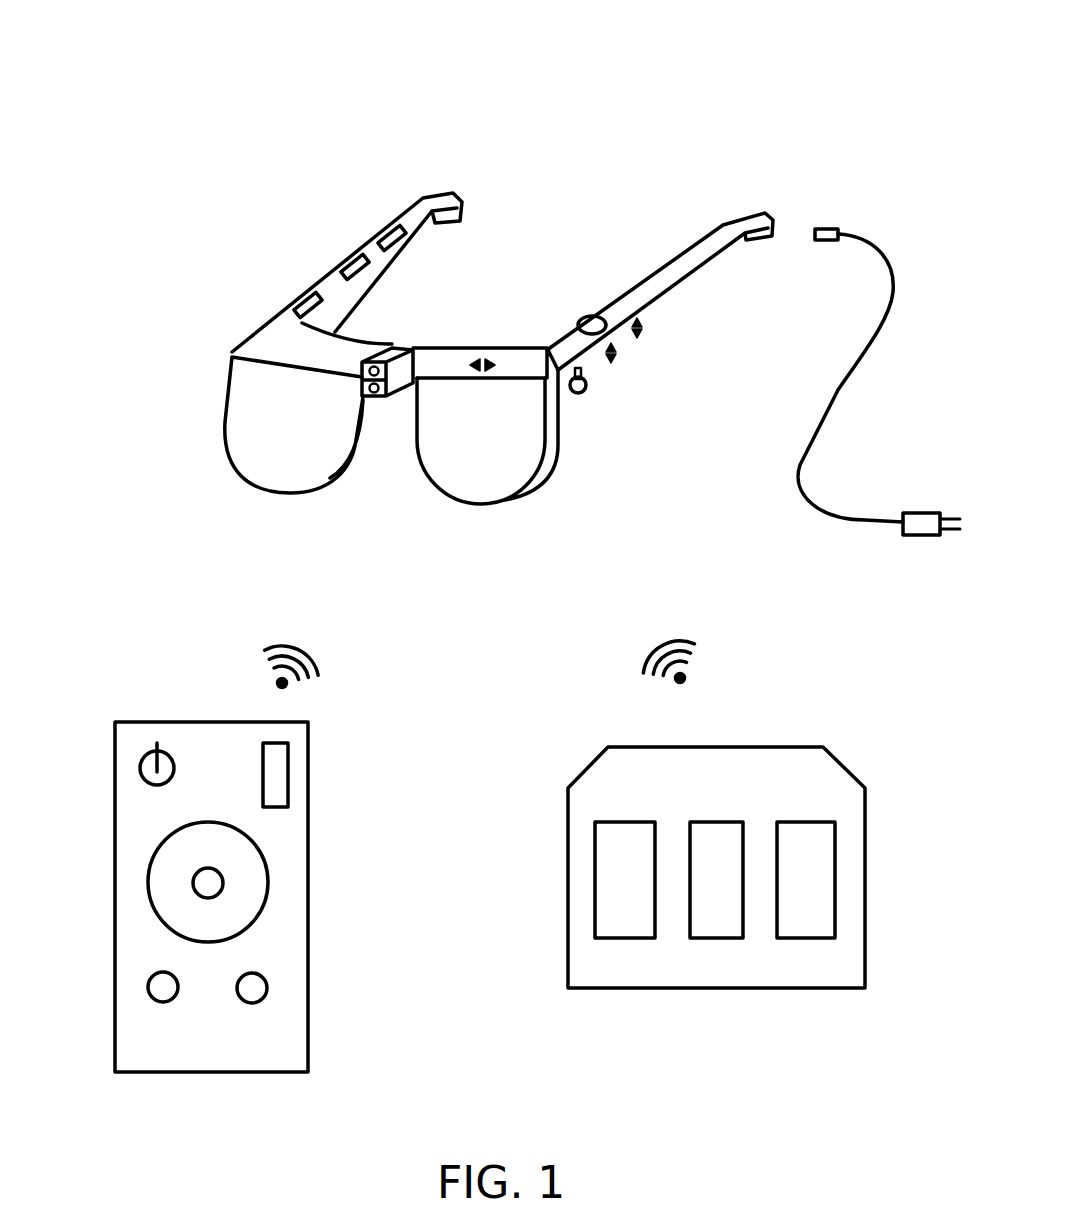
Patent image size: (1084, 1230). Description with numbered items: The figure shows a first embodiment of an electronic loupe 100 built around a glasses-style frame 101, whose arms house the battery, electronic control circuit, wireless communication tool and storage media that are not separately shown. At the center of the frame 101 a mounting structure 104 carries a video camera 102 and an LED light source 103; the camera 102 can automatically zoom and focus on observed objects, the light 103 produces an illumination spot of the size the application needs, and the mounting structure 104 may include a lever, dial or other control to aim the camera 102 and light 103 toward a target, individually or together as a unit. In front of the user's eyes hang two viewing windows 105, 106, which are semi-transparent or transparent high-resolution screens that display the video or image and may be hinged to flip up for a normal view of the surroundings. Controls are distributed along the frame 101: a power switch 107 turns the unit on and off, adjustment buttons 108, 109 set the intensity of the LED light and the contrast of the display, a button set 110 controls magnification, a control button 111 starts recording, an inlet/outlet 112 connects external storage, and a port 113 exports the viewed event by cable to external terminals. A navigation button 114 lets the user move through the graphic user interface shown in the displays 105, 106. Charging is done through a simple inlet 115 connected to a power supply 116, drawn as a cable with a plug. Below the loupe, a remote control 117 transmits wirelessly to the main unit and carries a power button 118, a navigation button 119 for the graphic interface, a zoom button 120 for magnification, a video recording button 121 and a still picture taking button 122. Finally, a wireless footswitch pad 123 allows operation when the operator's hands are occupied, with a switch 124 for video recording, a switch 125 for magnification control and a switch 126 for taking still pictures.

The electronic loupe 100 is at (506, 128).
The frame 101 is at (275, 333).
The video camera 102 is at (375, 398).
The LED light source 103 is at (387, 345).
The mounting structure 104 is at (482, 360).
The viewing window 105 is at (480, 468).
The viewing window 106 is at (273, 447).
The power switch 107 is at (583, 393).
The adjustment button 108 is at (617, 358).
The adjustment button 109 is at (641, 334).
The magnification button 110 is at (492, 360).
The control button 111 is at (310, 298).
The inlet/outlet 112 is at (360, 252).
The port 113 is at (399, 232).
The navigation button 114 is at (589, 322).
The inlet 115 is at (775, 222).
The power supply 116 is at (838, 390).
The remote control 117 is at (125, 733).
The power button 118 is at (167, 757).
The navigation button 119 is at (255, 893).
The zoom button 120 is at (275, 775).
The video recording button 121 is at (165, 987).
The still picture taking button 122 is at (255, 988).
The wireless footswitch pad 123 is at (583, 770).
The switch 124 is at (605, 900).
The switch 125 is at (723, 837).
The switch 126 is at (818, 882).